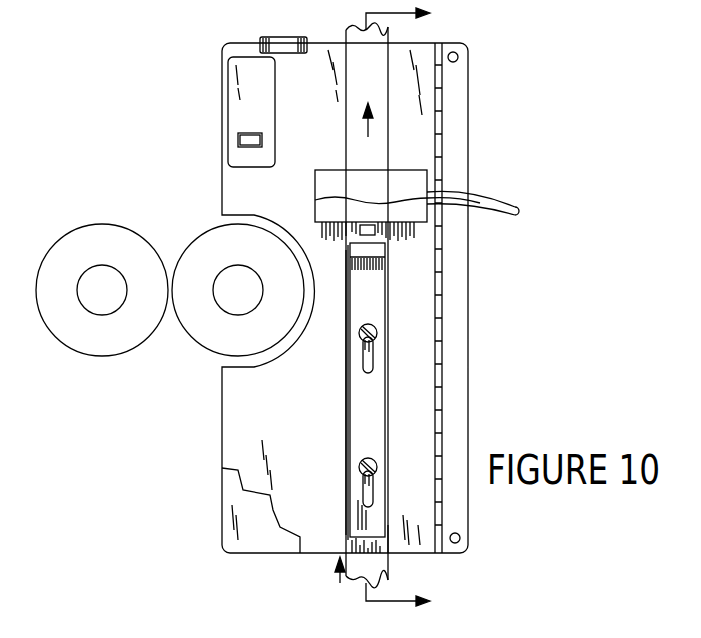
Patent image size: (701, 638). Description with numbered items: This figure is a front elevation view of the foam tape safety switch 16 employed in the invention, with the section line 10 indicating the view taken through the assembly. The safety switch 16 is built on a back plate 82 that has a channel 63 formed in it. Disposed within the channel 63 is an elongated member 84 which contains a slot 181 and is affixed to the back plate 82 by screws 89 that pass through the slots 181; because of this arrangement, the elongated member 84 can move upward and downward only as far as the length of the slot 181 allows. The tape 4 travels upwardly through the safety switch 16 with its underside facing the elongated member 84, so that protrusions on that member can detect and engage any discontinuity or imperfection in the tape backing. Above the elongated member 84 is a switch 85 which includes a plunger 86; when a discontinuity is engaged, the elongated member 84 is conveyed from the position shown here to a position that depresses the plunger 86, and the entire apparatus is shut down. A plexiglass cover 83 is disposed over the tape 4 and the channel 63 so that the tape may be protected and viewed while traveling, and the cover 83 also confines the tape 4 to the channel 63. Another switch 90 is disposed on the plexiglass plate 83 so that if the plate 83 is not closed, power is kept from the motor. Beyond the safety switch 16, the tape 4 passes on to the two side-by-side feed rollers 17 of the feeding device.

The tape 4 is at (385, 34).
The section line 10 is at (411, 307).
The safety switch 16 is at (522, 318).
The feed rollers 17 is at (102, 254).
The channel 63 is at (388, 532).
The back plate 82 is at (276, 543).
The plexiglass cover 83 is at (280, 430).
The elongated member 84 is at (380, 415).
The switch 85 is at (388, 196).
The plunger 86 is at (500, 206).
The screws 89 is at (377, 331).
The switch 90 is at (262, 87).
The slot 181 is at (372, 360).